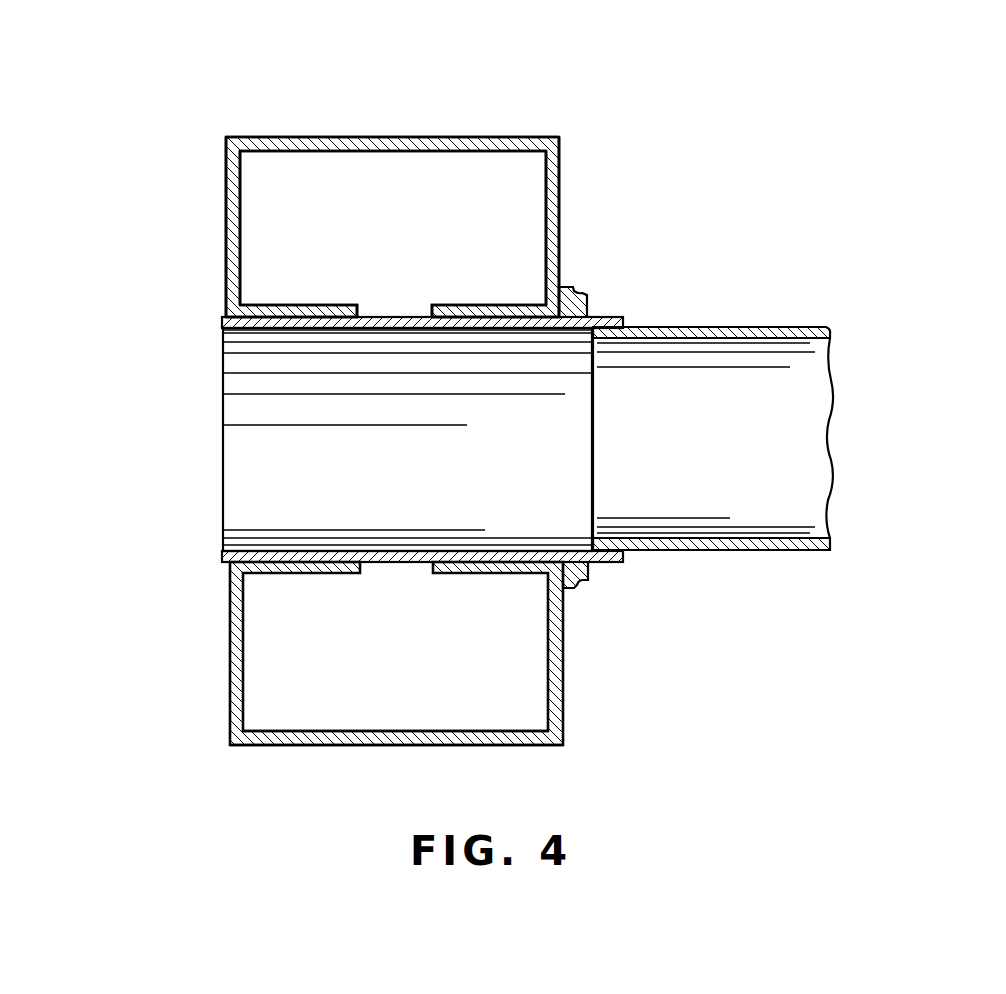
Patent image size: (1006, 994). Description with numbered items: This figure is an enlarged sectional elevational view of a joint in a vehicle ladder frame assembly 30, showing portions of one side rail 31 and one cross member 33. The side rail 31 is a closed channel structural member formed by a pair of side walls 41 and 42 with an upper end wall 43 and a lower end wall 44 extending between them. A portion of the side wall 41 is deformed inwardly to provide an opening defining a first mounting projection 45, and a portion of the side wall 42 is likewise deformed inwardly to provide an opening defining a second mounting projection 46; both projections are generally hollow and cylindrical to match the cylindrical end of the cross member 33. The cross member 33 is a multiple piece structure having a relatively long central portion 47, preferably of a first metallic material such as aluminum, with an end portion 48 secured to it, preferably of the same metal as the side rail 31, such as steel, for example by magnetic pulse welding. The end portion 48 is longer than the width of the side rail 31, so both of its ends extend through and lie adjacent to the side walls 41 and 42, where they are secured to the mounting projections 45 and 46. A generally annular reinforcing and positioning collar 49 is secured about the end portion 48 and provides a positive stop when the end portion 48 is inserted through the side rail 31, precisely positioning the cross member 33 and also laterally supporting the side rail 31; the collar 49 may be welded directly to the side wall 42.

The ladder frame assembly 30 is at (155, 591).
The side rail 31 is at (188, 112).
The cross member 33 is at (859, 469).
The side wall 41 is at (226, 229).
The side wall 42 is at (560, 192).
The upper end wall 43 is at (387, 137).
The lower end wall 44 is at (380, 740).
The first mounting projection 45 is at (320, 305).
The second mounting projection 46 is at (485, 305).
The central portion 47 is at (756, 328).
The end portion 48 is at (403, 318).
The reinforcing and positioning collar 49 is at (575, 292).